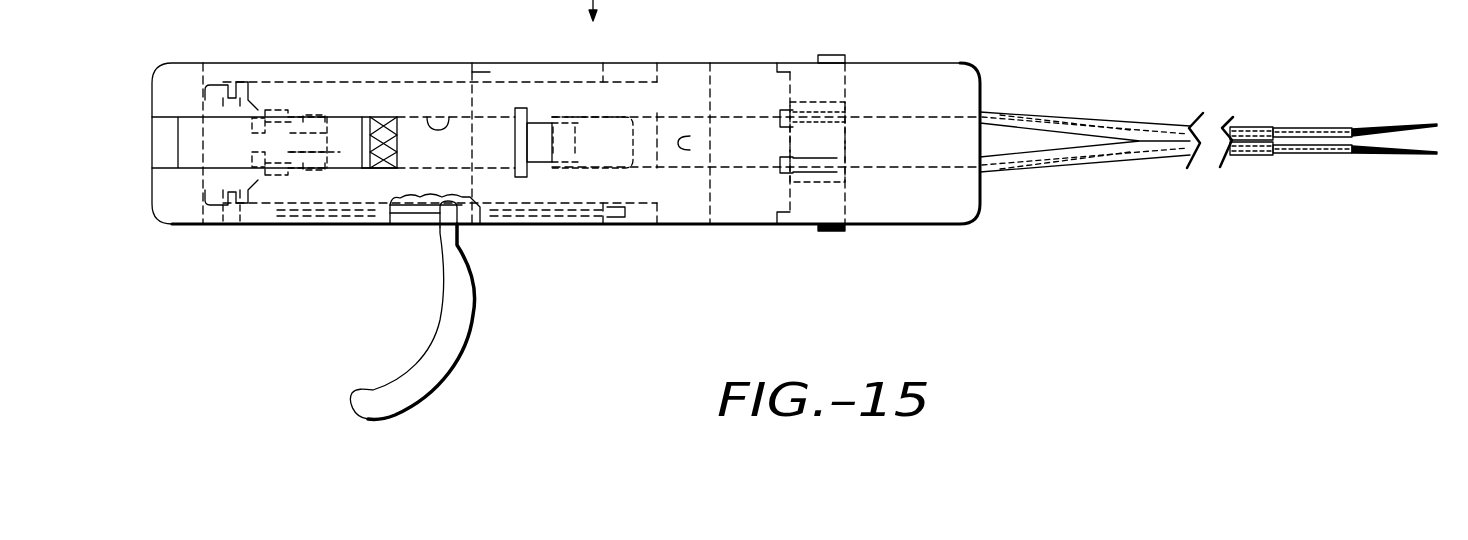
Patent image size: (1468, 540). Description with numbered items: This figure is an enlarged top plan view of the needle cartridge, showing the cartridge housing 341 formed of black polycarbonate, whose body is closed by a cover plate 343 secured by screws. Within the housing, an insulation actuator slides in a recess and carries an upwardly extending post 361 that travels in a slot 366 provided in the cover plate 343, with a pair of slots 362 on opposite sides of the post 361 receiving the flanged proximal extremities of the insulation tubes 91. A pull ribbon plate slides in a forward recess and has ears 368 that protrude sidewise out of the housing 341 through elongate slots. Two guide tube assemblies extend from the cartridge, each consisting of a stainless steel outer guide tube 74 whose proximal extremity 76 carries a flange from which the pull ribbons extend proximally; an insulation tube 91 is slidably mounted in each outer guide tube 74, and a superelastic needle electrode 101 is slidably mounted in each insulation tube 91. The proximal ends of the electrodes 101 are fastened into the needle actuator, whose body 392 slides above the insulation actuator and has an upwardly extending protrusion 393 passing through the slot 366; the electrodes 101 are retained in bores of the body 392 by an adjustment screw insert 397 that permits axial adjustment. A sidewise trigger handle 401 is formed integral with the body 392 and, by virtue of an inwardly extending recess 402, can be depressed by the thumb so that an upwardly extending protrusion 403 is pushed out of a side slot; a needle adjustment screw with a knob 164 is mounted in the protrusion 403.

The cover plate 343 is at (937, 207).
The adjustment screw insert 397 is at (256, 75).
The upwardly extending protrusion 393 is at (333, 143).
The knob 164 is at (388, 125).
The slot 366 is at (427, 117).
The upwardly extending post 361 is at (538, 137).
The ears 368 is at (828, 53).
The cartridge housing 341 is at (672, 235).
The proximal extremity 76 is at (1058, 123).
The outer guide tube 74 is at (1123, 128).
The insulation tube 91 is at (1298, 128).
The needle electrode 101 is at (1418, 123).
The slots 362 is at (262, 212).
The body 392 is at (385, 170).
The upwardly extending protrusion 403 is at (457, 228).
The inwardly extending recess 402 is at (379, 258).
The trigger handle 401 is at (436, 374).